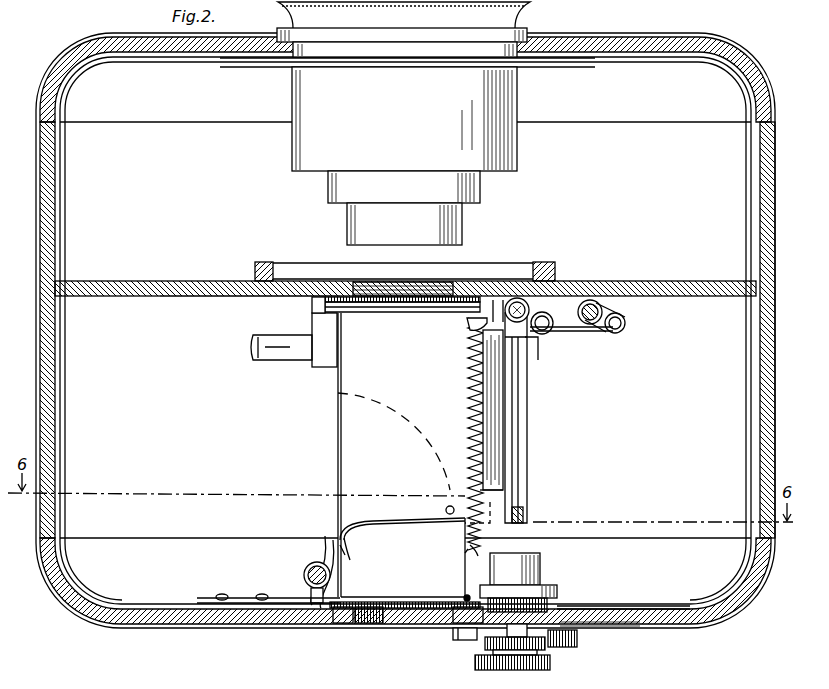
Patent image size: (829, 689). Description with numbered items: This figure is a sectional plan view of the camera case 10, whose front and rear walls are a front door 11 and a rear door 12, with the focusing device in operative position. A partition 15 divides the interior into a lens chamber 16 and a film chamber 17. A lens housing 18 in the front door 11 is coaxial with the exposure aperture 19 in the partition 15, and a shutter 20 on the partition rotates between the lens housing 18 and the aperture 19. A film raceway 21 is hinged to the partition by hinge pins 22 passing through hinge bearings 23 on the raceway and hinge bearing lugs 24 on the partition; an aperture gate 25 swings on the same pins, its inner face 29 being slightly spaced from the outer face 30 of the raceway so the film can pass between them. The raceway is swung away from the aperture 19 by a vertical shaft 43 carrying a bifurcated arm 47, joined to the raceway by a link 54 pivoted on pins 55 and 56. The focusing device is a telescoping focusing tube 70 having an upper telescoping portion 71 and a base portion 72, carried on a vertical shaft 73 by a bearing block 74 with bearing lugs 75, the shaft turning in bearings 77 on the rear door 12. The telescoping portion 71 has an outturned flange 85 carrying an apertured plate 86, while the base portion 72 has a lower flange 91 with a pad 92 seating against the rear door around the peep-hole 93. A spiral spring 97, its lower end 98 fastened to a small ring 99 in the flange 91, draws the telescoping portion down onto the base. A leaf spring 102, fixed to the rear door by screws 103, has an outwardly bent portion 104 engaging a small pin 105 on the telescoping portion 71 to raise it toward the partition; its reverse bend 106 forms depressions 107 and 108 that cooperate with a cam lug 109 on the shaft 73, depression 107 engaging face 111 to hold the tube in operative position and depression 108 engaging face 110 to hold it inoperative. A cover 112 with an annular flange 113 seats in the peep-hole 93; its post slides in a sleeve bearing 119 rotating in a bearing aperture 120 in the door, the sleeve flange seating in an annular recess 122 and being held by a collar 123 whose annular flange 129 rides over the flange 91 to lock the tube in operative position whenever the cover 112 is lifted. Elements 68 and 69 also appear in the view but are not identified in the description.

The camera case 10 is at (48, 415).
The front door 11 is at (161, 55).
The rear door 12 is at (126, 605).
The partition 15 is at (181, 281).
The lens chamber 16 is at (603, 177).
The film chamber 17 is at (620, 435).
The lens housing 18 is at (318, 99).
The exposure aperture 19 is at (430, 289).
The shutter 20 is at (265, 262).
The film raceway 21 is at (516, 497).
The hinge pins 22 is at (511, 299).
The hinge bearings 23 is at (538, 360).
The hinge bearing lugs 24 is at (539, 262).
The aperture gate 25 is at (383, 305).
The inner face 29 is at (510, 407).
The outer face 30 is at (522, 428).
The vertically disposed shaft 43 is at (593, 300).
The bifurcated arm 47 is at (618, 320).
The link 54 is at (589, 334).
The pin 55 is at (625, 327).
The pin 56 is at (546, 335).
The chamber wall 68 is at (349, 318).
The partition underside 69 is at (197, 297).
The telescoping focusing tube 70 is at (357, 433).
The telescoping portion 71 is at (360, 378).
The base portion 72 is at (403, 557).
The vertically disposed shaft 73 is at (306, 565).
The bearing block 74 is at (341, 557).
The bearing lugs 75 is at (318, 562).
The bearings 77 is at (305, 609).
The outturned flange 85 is at (322, 318).
The plate 86 is at (320, 306).
The flange 91 is at (449, 600).
The pad 92 is at (413, 608).
The peep-hole 93 is at (457, 632).
The spiral spring 97 is at (468, 400).
The lower end 98 is at (465, 553).
The small ring 99 is at (463, 596).
The leaf spring 102 is at (317, 606).
The screws 103 is at (237, 583).
The outwardly bent portion 104 is at (401, 523).
The small pin 105 is at (448, 505).
The reverse bend 106 is at (335, 607).
The depression 107 is at (300, 598).
The depression 108 is at (327, 537).
The cam lug 109 is at (321, 605).
The face 110 is at (303, 586).
The face 111 is at (346, 612).
The cover 112 is at (562, 647).
The annular flange 113 is at (506, 661).
The sleeve bearing 119 is at (541, 578).
The bearing aperture 120 is at (597, 623).
The annular recess 122 is at (580, 627).
The collar 123 is at (557, 594).
The annular flange 129 is at (572, 591).